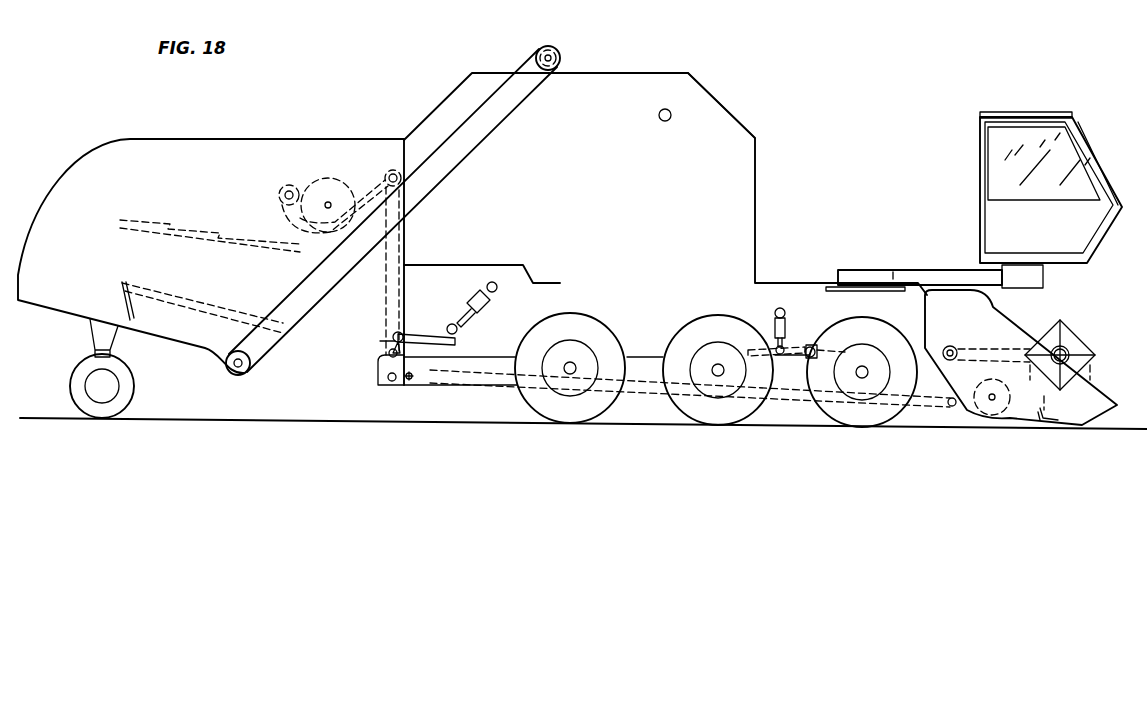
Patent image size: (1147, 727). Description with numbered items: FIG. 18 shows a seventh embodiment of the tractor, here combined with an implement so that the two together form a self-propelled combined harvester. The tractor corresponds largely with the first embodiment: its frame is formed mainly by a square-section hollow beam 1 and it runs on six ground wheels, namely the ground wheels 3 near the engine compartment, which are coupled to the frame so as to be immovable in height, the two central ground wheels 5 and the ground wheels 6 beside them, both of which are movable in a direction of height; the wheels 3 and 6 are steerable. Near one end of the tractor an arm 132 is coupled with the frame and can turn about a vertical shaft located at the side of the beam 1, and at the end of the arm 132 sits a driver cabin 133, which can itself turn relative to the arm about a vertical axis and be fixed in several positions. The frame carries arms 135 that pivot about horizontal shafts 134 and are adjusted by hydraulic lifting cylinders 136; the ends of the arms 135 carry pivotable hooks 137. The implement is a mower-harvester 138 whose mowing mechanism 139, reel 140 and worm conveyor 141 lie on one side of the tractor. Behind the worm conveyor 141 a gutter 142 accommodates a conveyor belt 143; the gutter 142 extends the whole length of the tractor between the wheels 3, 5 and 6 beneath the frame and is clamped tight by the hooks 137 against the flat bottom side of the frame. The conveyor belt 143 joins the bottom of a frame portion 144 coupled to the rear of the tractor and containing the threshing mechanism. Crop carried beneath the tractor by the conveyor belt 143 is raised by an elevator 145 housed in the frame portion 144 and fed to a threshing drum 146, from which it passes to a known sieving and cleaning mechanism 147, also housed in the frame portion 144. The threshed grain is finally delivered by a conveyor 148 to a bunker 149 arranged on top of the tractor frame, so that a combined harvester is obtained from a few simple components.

The square-section hollow beam 1 is at (766, 282).
The ground wheels 3 is at (530, 398).
The central ground wheels 5 is at (685, 330).
The ground wheels 6 is at (890, 330).
The arm 132 is at (913, 272).
The driver cabin 133 is at (980, 153).
The horizontal shafts 134 is at (468, 336).
The arms 135 is at (425, 333).
The hydraulic lifting cylinders 136 is at (487, 300).
The pivotable hooks 137 is at (390, 341).
The mower-harvester 138 is at (661, 65).
The mowing mechanism 139 is at (1046, 414).
The reel 140 is at (1075, 336).
The worm conveyor 141 is at (997, 388).
The gutter 142 is at (815, 396).
The conveyor belt 143 is at (641, 388).
The frame portion 144 is at (197, 347).
The elevator 145 is at (400, 247).
The threshing drum 146 is at (345, 180).
The sieving and cleaning mechanism 147 is at (183, 218).
The conveyor 148 is at (510, 102).
The bunker 149 is at (745, 128).